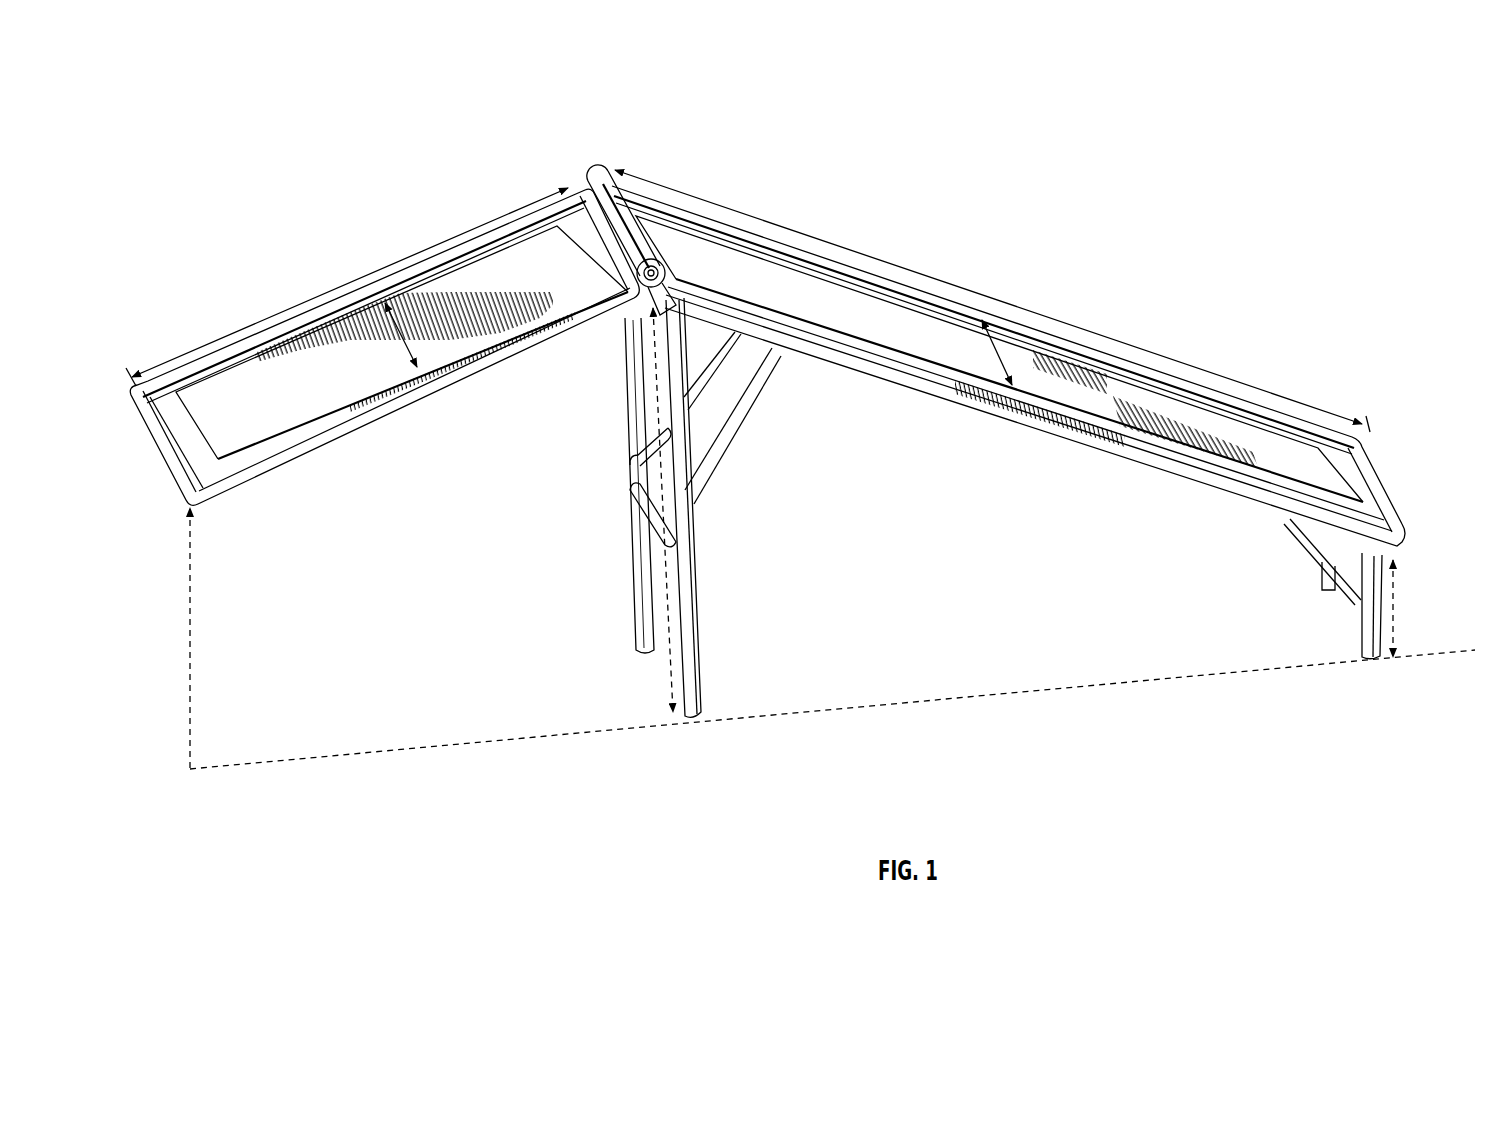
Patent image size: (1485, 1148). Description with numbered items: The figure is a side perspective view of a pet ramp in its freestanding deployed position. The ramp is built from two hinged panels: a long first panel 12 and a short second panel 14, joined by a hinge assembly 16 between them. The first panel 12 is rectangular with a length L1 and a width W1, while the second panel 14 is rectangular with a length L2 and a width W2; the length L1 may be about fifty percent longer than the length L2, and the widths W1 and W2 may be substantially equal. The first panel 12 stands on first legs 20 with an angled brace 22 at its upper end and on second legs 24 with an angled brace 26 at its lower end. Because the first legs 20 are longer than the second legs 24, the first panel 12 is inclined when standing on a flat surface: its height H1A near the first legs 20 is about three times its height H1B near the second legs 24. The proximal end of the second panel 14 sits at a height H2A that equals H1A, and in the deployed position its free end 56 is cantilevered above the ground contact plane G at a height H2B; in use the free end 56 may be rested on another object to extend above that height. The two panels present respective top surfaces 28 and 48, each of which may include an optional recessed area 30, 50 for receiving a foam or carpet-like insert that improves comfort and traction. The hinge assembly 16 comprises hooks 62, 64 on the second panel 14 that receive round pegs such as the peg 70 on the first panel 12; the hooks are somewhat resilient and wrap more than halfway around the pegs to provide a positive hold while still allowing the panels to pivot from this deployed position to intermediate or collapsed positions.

The first panel 12 is at (961, 300).
The second panel 14 is at (318, 304).
The hinge assembly 16 is at (635, 266).
The first legs 20 is at (698, 615).
The angled brace 22 is at (745, 420).
The second legs 24 is at (1358, 632).
The angled brace 26 is at (1300, 556).
The top surface 28 is at (880, 325).
The recessed area 30 is at (1165, 382).
The top surface 48 is at (267, 420).
The recessed area 50 is at (383, 393).
The free end 56 is at (150, 452).
The hook 62 is at (668, 248).
The hook 64 is at (598, 166).
The peg 70 is at (683, 305).
The length of first panel L1 is at (834, 246).
The length of second panel L2 is at (390, 264).
The width of first panel W1 is at (994, 352).
The width of second panel W2 is at (400, 338).
The height of upper end of first panel H1A is at (672, 703).
The height of proximal end of second panel H2A is at (625, 697).
The height of first panel proximate second legs H1B is at (1397, 592).
The height of free end of second panel H2B is at (194, 610).
The ground contact plane G is at (425, 748).